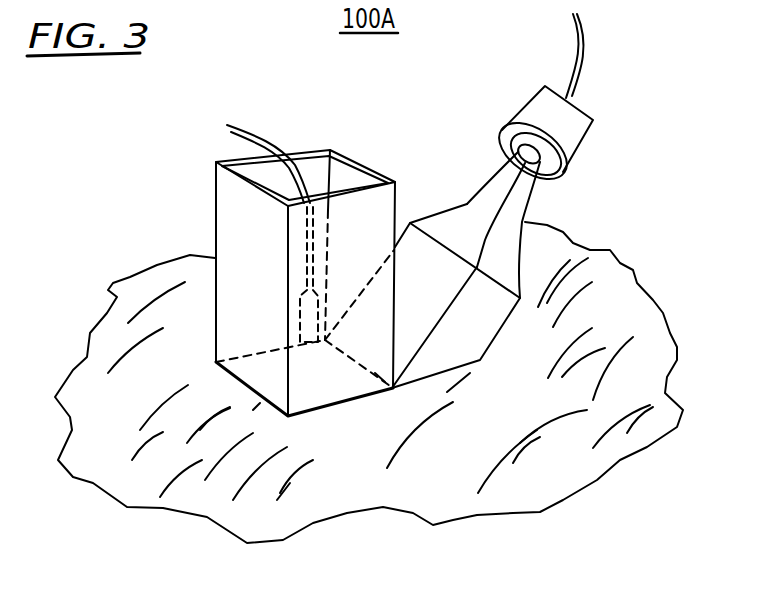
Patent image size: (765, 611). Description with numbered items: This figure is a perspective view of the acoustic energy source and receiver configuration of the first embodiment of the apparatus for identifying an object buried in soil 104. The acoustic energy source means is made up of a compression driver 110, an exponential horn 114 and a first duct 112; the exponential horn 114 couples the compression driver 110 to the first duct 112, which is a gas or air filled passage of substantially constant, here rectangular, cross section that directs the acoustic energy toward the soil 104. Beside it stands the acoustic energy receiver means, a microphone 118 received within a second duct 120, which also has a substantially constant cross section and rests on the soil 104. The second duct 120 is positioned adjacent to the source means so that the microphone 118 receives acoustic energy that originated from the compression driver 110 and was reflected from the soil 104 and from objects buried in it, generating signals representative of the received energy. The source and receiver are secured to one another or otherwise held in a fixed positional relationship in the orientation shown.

The soil 104 is at (130, 468).
The compression driver 110 is at (587, 127).
The first duct 112 is at (476, 342).
The exponential horn 114 is at (467, 204).
The microphone 118 is at (297, 318).
The second duct 120 is at (227, 220).